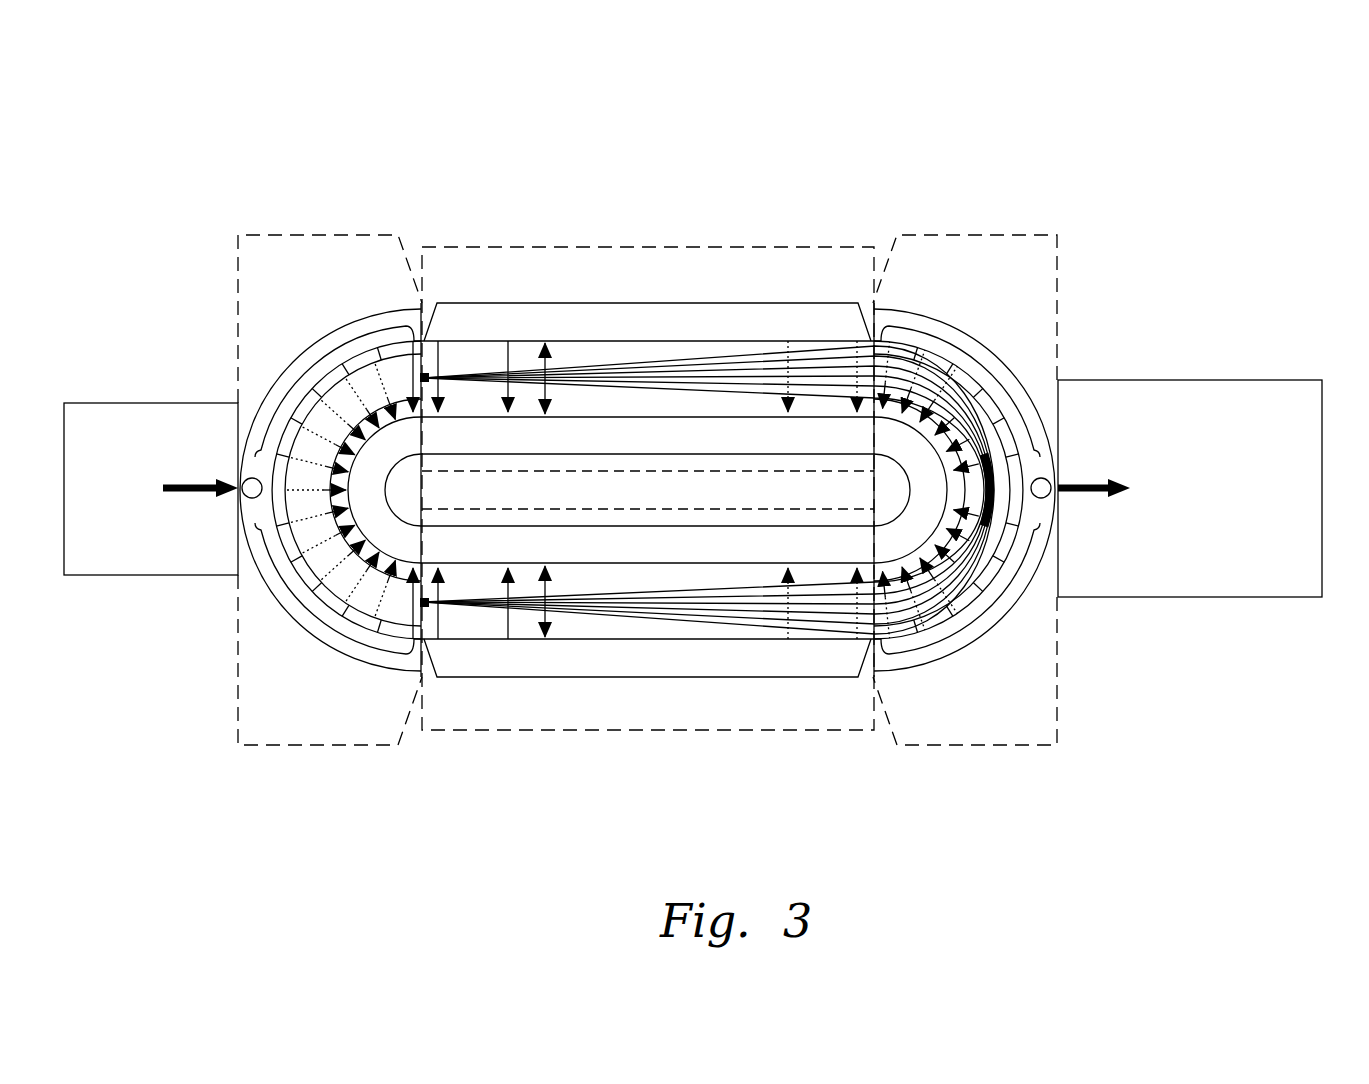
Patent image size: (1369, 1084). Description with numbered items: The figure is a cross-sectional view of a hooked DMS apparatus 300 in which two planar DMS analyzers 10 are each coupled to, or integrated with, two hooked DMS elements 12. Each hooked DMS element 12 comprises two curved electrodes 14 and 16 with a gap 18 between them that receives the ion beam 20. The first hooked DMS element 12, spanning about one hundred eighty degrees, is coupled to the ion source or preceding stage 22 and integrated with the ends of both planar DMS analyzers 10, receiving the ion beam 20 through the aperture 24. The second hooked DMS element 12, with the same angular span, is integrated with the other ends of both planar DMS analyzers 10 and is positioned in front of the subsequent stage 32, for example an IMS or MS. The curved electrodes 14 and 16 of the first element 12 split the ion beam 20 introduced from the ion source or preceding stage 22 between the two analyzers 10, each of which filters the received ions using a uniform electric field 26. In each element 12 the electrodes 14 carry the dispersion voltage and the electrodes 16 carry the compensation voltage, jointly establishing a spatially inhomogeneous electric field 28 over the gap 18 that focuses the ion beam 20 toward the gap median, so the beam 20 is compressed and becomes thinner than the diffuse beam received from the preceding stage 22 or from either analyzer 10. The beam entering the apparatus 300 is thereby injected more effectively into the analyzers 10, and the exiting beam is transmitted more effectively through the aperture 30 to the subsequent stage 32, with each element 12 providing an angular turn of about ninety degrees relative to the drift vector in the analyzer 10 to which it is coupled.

The hooked DMS apparatus 300 is at (1071, 111).
The planar DMS analyzer 10 is at (500, 247).
The hooked DMS element 12 is at (318, 236).
The curved electrode 14 is at (395, 450).
The curved electrode 16 is at (396, 308).
The gap 18 is at (547, 397).
The ion beam 20 is at (639, 490).
The ion source or preceding stage 22 is at (151, 489).
The aperture 24 is at (244, 496).
The uniform electric field 26 is at (648, 303).
The spatially inhomogeneous electric field 28 is at (316, 358).
The aperture 30 is at (1050, 498).
The subsequent stage 32 is at (1190, 488).